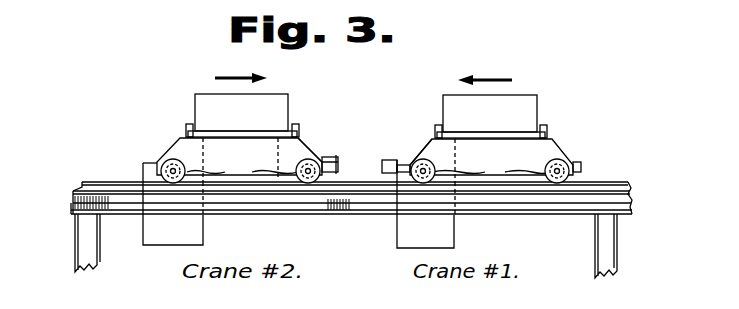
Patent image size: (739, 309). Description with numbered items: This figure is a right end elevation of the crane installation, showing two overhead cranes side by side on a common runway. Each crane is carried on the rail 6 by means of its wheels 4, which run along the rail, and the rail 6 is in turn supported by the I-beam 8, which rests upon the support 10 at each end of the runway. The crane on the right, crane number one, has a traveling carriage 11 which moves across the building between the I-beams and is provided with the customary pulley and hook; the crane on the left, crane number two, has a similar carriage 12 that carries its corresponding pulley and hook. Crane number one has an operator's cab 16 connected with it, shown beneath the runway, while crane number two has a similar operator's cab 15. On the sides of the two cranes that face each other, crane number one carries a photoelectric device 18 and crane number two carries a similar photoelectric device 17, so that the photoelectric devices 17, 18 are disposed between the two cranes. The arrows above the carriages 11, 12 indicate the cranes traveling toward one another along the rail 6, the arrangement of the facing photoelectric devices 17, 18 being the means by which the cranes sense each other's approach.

The wheels 4 is at (362, 162).
The rail 6 is at (102, 183).
The I-beam 8 is at (73, 200).
The support 10 is at (78, 247).
The traveling carriage 11 is at (523, 110).
The carriage 12 is at (200, 104).
The operator's cab 15 is at (205, 223).
The operator's cab 16 is at (452, 232).
The photoelectric device 17 is at (293, 153).
The photoelectric device 18 is at (428, 148).